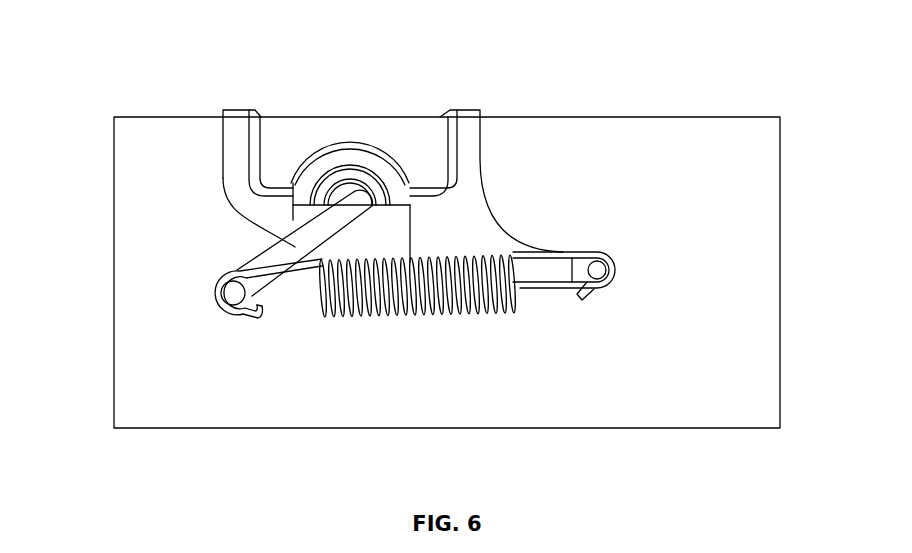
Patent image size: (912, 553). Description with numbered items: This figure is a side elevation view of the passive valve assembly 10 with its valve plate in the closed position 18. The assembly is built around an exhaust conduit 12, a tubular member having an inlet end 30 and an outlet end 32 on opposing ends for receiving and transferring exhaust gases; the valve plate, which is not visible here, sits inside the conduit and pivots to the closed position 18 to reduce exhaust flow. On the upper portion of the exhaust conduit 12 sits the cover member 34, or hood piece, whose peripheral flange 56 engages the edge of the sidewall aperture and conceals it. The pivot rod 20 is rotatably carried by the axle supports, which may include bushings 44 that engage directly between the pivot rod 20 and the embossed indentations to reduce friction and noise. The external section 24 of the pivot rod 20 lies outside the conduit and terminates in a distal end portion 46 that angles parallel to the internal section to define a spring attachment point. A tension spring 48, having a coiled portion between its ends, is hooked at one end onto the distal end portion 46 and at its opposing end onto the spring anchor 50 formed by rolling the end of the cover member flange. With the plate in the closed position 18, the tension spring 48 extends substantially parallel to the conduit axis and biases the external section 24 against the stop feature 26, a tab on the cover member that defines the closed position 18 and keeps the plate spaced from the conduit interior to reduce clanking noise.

The passive valve assembly 10 is at (101, 62).
The exhaust conduit 12 is at (630, 117).
The closed position 18 is at (73, 231).
The pivot rod 20 is at (295, 247).
The external section 24 is at (246, 245).
The stop feature 26 is at (351, 255).
The inlet end 30 is at (798, 139).
The outlet end 32 is at (86, 408).
The cover member 34 is at (418, 128).
The bushings 44 is at (345, 190).
The distal end portion 46 is at (209, 318).
The tension spring 48 is at (430, 305).
The spring anchor 50 is at (595, 265).
The peripheral flange 56 is at (469, 117).